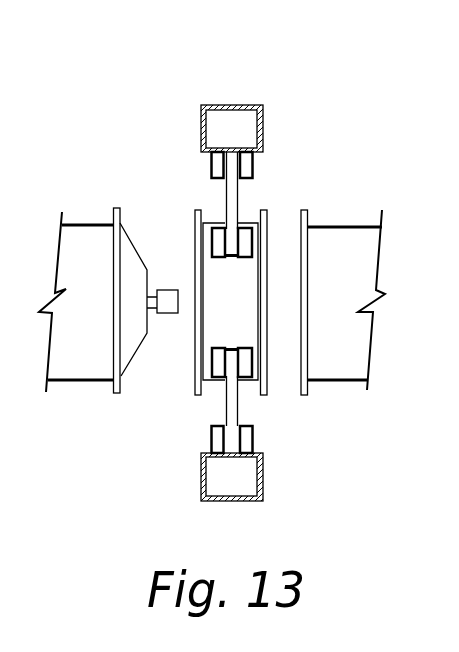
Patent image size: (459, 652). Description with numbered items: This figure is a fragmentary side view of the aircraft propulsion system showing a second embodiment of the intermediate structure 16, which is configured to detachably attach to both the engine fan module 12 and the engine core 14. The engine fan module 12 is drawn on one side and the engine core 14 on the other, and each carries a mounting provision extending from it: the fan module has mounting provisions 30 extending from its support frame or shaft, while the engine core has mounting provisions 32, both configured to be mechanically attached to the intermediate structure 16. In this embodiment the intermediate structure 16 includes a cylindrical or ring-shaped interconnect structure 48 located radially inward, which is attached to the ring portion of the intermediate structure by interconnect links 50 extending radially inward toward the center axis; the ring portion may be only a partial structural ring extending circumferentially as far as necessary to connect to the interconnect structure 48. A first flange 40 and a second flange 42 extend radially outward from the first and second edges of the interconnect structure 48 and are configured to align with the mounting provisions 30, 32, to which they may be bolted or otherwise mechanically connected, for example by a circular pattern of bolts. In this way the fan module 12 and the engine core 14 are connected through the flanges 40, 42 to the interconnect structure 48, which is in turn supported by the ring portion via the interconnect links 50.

The engine fan module 12 is at (330, 227).
The engine core 14 is at (77, 222).
The intermediate structure 16 is at (213, 105).
The mounting provisions 30 is at (308, 268).
The mounting provisions 32 is at (118, 216).
The first flange 40 is at (268, 237).
The second flange 42 is at (196, 222).
The interconnect structure 48 is at (218, 318).
The interconnect links 50 is at (238, 200).